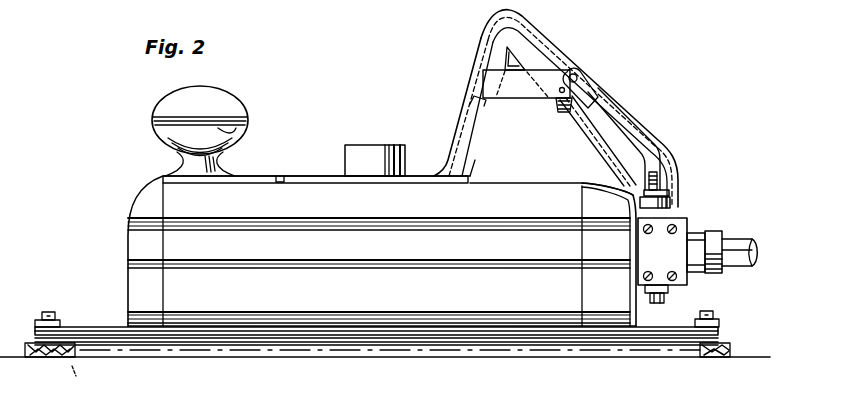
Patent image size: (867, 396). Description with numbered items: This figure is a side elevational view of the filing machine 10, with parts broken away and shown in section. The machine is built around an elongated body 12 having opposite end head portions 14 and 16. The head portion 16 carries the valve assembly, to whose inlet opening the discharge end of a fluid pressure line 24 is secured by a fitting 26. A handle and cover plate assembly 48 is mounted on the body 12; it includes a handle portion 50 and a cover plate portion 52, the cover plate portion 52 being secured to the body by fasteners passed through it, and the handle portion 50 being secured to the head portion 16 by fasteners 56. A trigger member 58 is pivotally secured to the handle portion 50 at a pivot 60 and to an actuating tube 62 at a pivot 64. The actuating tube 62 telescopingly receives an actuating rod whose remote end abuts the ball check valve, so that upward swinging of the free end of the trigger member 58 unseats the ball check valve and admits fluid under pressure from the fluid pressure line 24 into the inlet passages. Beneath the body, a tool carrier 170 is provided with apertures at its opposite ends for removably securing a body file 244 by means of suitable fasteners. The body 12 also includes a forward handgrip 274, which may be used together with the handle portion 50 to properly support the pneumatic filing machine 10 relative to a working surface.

The filing machine 10 is at (116, 323).
The body 12 is at (516, 171).
The head portion 14 is at (132, 185).
The head portion 16 is at (596, 181).
The fluid pressure line 24 is at (738, 241).
The fitting 26 is at (713, 231).
The handle and cover plate assembly 48 is at (448, 129).
The handle portion 50 is at (571, 40).
The cover plate portion 52 is at (353, 141).
The fasteners 56 is at (676, 217).
The trigger member 58 is at (508, 89).
The pivot 60 is at (564, 96).
The actuating tube 62 is at (616, 116).
The pivot 64 is at (580, 80).
The tool carrier 170 is at (726, 331).
The body file 244 is at (712, 354).
The forward handgrip 274 is at (241, 114).